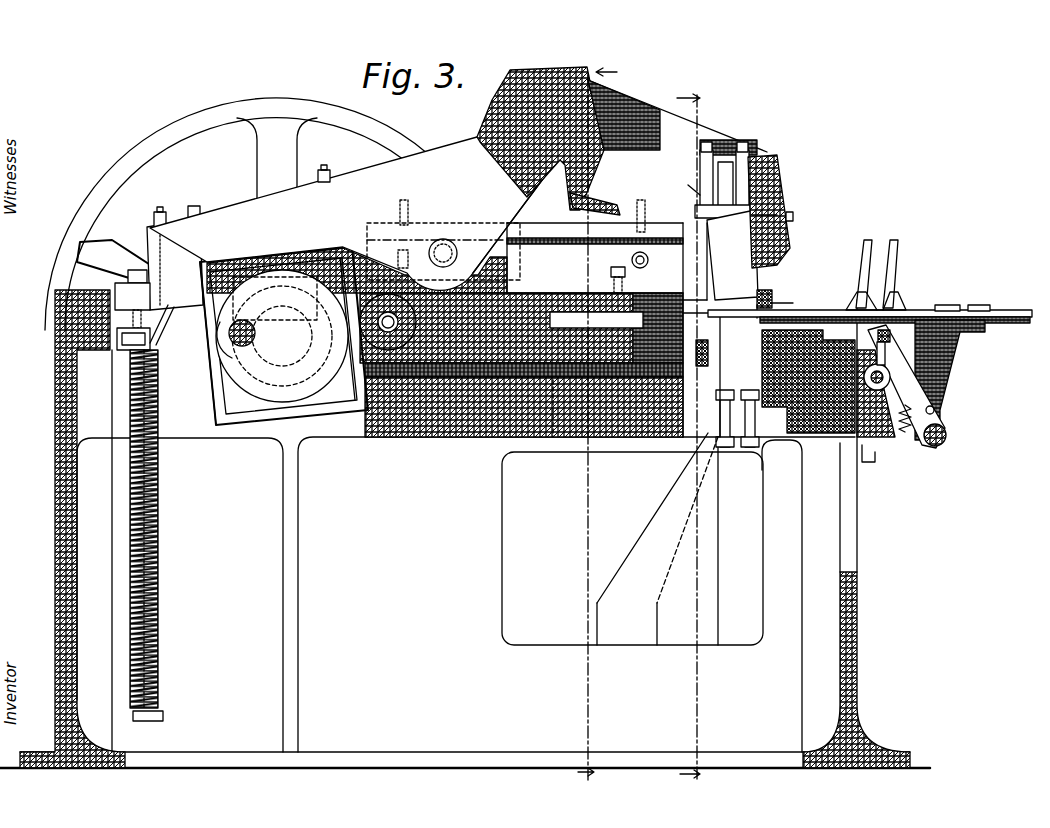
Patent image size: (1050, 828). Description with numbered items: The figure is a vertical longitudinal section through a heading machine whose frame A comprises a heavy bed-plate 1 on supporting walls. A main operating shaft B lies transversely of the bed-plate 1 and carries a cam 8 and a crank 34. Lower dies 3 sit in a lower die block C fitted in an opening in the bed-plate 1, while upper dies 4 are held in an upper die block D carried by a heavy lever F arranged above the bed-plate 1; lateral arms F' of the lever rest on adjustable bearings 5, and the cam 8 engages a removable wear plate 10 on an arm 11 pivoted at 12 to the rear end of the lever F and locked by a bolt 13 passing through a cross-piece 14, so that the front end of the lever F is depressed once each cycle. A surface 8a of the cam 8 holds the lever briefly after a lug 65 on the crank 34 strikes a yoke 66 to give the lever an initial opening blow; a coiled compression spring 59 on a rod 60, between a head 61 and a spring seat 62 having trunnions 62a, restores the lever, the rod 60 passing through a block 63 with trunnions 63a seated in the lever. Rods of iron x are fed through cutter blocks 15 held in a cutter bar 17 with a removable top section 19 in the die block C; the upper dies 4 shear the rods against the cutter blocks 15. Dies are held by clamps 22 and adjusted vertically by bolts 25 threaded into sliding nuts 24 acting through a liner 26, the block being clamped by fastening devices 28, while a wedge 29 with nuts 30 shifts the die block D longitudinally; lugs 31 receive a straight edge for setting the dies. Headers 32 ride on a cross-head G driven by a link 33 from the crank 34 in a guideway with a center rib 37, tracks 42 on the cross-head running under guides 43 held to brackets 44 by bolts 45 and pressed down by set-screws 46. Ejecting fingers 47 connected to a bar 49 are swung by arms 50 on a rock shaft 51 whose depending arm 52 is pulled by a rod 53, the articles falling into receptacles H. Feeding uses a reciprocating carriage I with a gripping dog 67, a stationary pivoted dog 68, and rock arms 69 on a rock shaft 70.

The bed-plate 1 is at (412, 430).
The lower dies 3 is at (727, 380).
The upper dies 4 is at (722, 268).
The adjustable bearings 5 is at (689, 434).
The cam 8 is at (280, 393).
The cam surface 8a is at (310, 375).
The wear plate 10 is at (297, 287).
The arm 11 is at (268, 258).
The pivot 12 is at (450, 243).
The bolt 13 is at (160, 213).
The cross-piece 14 is at (148, 258).
The cutter blocks 15 is at (770, 295).
The cutter bar 17 is at (793, 301).
The removable top section 19 is at (777, 295).
The clamps 22 is at (697, 225).
The nuts 24 is at (657, 408).
The adjusting bolts 25 is at (700, 148).
The liner 26 is at (767, 207).
The fastening devices 28 is at (770, 217).
The wedge 29 is at (793, 217).
The nuts 30 is at (753, 150).
The lugs 31 is at (703, 313).
The headers 32 is at (596, 300).
The link 33 is at (322, 408).
The crank 34 is at (152, 342).
The center rib 37 is at (553, 380).
The tracks 42 is at (479, 251).
The guides 43 is at (505, 205).
The brackets 44 is at (588, 227).
The bolts 45 is at (402, 257).
The set-screws 46 is at (403, 203).
The fingers 47 is at (800, 318).
The bar 49 is at (917, 290).
The arms 50 is at (887, 343).
The rock shaft 51 is at (888, 377).
The depending arm 52 is at (883, 427).
The rod 53 is at (870, 457).
The coiled compression spring 59 is at (157, 535).
The rod 60 is at (157, 627).
The head 61 is at (160, 720).
The spring seat 62 is at (152, 353).
The trunnions 62a is at (115, 345).
The block 63 is at (118, 292).
The trunnions 63a is at (130, 277).
The lug 65 is at (220, 327).
The yoke 66 is at (240, 417).
The dog 67 is at (895, 256).
The pivotally mounted dog 68 is at (862, 253).
The rock arms 69 is at (927, 393).
The rock shaft 70 is at (947, 435).
The frame A is at (465, 529).
The main operating shaft B is at (290, 323).
The lower die block C is at (808, 541).
The upper die block D is at (787, 243).
The lever F is at (353, 213).
The arms F' is at (595, 272).
The cross-head G is at (527, 270).
The receptacles H is at (637, 533).
The reciprocating carriage I is at (970, 303).
The rod or bar of iron x is at (1028, 297).